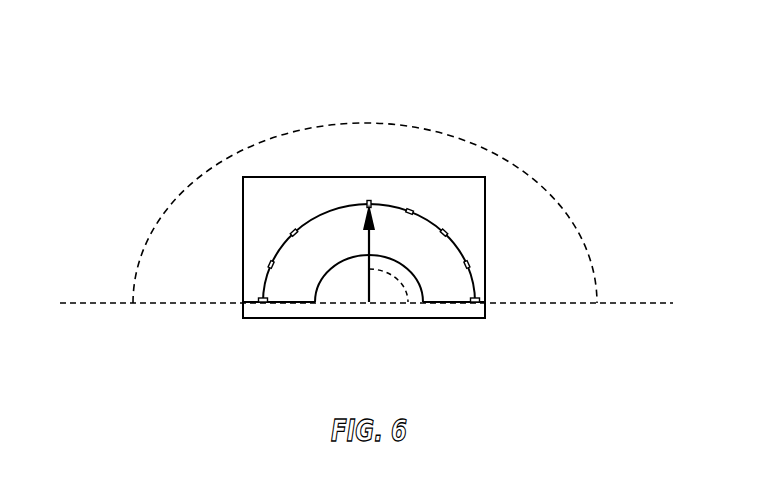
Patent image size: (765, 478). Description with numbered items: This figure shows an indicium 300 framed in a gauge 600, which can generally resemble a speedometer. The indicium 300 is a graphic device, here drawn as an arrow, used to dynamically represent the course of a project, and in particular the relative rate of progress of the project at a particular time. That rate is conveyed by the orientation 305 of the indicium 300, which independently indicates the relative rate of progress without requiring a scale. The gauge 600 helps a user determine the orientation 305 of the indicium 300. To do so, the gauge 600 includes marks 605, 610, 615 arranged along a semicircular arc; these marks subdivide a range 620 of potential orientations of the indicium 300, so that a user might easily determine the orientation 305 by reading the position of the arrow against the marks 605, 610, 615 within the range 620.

The gauge 600 is at (142, 58).
The indicium 300 is at (369, 242).
The orientation 305 is at (403, 282).
The mark 605 is at (262, 302).
The mark 610 is at (271, 265).
The mark 615 is at (295, 233).
The range 620 is at (590, 253).